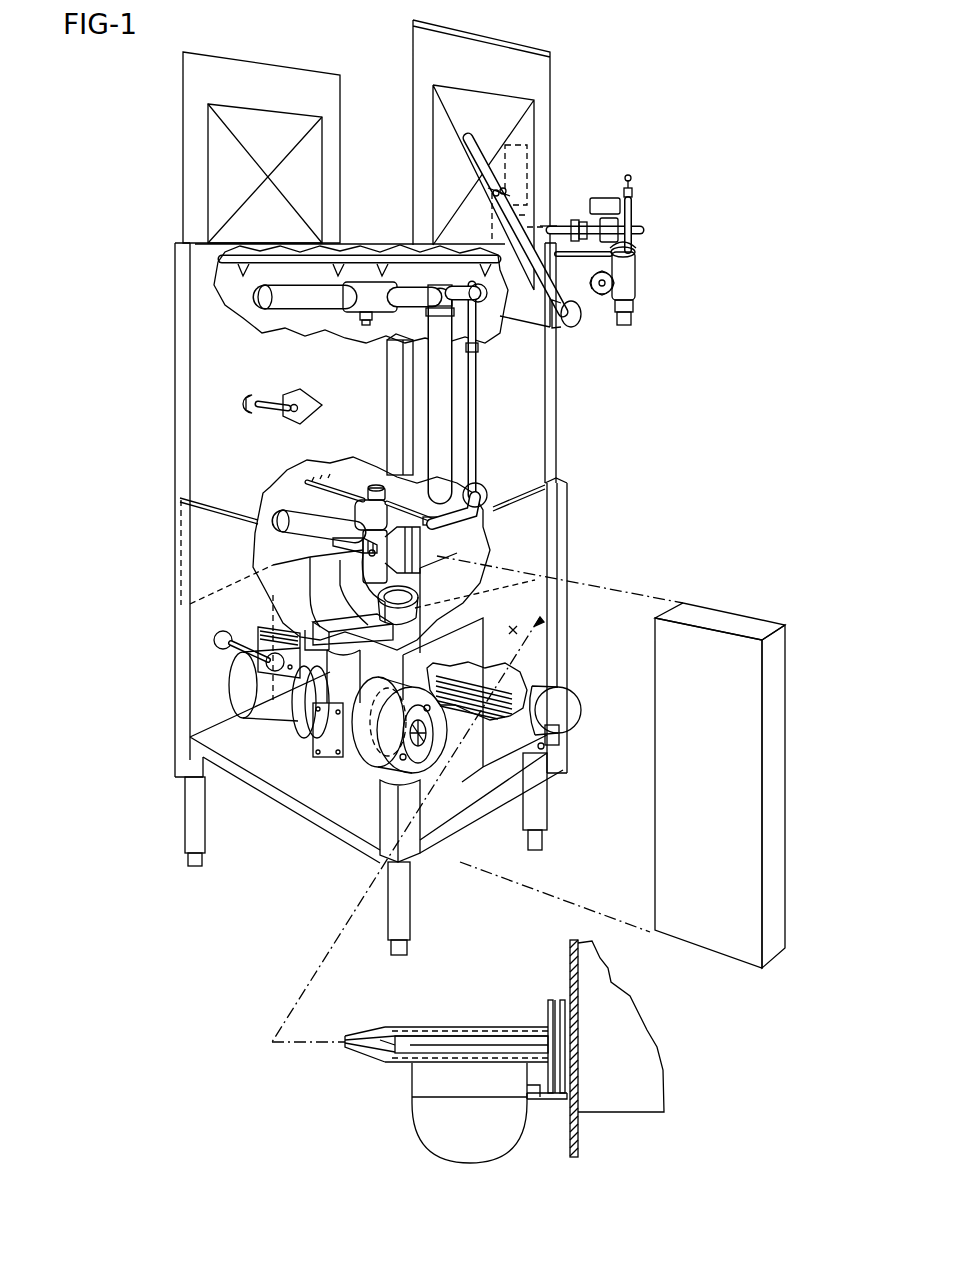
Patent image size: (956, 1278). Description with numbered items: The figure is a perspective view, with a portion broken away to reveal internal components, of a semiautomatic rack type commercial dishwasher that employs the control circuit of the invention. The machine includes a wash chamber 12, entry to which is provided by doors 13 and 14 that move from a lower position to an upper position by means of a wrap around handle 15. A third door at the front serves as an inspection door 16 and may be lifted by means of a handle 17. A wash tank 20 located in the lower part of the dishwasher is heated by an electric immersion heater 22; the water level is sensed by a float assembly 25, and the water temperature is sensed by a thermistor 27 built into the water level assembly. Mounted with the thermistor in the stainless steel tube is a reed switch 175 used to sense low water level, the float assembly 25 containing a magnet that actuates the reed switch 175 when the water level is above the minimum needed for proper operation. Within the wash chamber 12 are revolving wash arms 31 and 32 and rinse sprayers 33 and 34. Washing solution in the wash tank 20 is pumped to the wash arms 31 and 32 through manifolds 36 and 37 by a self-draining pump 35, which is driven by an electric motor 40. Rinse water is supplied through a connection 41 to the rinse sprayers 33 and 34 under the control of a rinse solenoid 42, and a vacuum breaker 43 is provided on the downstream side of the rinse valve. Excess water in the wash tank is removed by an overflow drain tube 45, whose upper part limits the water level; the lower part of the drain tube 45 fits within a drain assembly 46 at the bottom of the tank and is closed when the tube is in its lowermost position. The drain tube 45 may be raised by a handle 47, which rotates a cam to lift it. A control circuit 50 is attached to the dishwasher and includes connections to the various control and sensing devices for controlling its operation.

The wash chamber 12 is at (175, 318).
The door 13 is at (187, 118).
The door 14 is at (515, 108).
The wrap around handle 15 is at (470, 178).
The inspection door 16 is at (190, 434).
The handle 17 is at (273, 410).
The wash tank 20 is at (532, 648).
The electric immersion heater 22 is at (515, 683).
The float assembly 25 is at (465, 1023).
The thermistor 27 is at (400, 1068).
The revolving wash arm 31 is at (258, 515).
The revolving wash arm 32 is at (270, 297).
The rinse sprayer 33 is at (230, 257).
The rinse sprayer 34 is at (342, 483).
The self-draining pump 35 is at (370, 750).
The manifold 36 is at (310, 553).
The manifold 37 is at (437, 345).
The electric motor 40 is at (270, 717).
The connection 41 is at (633, 305).
The rinse solenoid 42 is at (607, 200).
The vacuum breaker 43 is at (530, 167).
The overflow drain tube 45 is at (455, 608).
The drain assembly 46 is at (427, 743).
The handle 47 is at (223, 645).
The control circuit 50 is at (660, 817).
The reed switch 175 is at (493, 1038).